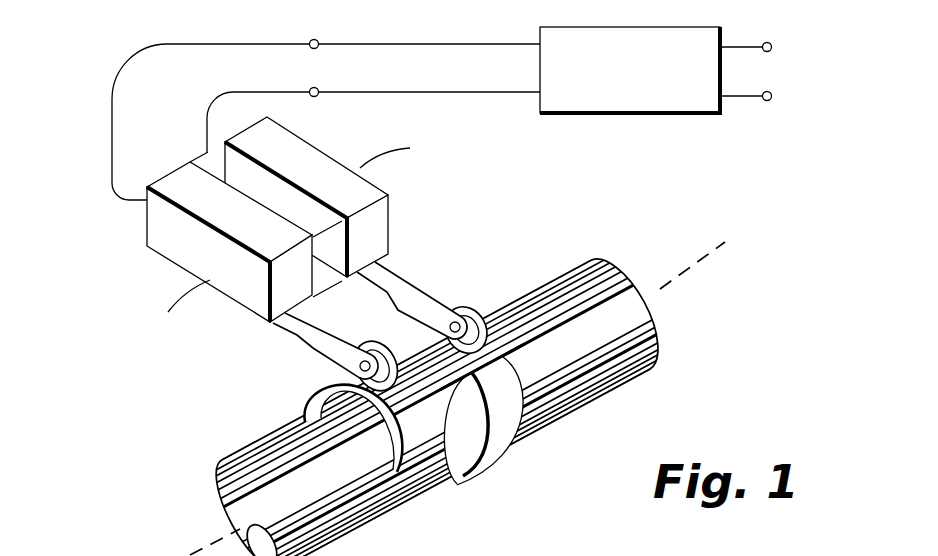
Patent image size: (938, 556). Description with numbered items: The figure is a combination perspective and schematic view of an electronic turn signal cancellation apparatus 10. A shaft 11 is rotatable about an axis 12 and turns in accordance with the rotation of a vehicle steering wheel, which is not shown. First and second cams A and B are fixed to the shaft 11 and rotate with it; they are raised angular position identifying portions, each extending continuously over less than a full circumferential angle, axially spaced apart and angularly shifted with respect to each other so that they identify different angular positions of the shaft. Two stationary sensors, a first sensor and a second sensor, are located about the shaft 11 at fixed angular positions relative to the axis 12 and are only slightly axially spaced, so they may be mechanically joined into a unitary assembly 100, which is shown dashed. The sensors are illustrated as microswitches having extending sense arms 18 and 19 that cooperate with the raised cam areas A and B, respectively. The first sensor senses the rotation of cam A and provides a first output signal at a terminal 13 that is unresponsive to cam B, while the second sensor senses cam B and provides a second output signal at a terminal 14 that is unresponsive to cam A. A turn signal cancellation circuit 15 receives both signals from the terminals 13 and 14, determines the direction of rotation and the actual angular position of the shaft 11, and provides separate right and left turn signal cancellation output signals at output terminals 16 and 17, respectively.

The turn signal cancellation apparatus 10 is at (529, 212).
The shaft 11 is at (604, 372).
The axis 12 is at (690, 270).
The terminal 13 is at (317, 40).
The terminal 14 is at (317, 88).
The turn signal cancellation circuit 15 is at (663, 27).
The output terminal 16 is at (767, 42).
The output terminal 17 is at (767, 101).
The sense arm 18 is at (313, 344).
The sense arm 19 is at (395, 280).
The unitary sensor assembly 100 is at (205, 152).
The first cam A is at (317, 397).
The second cam B is at (498, 463).